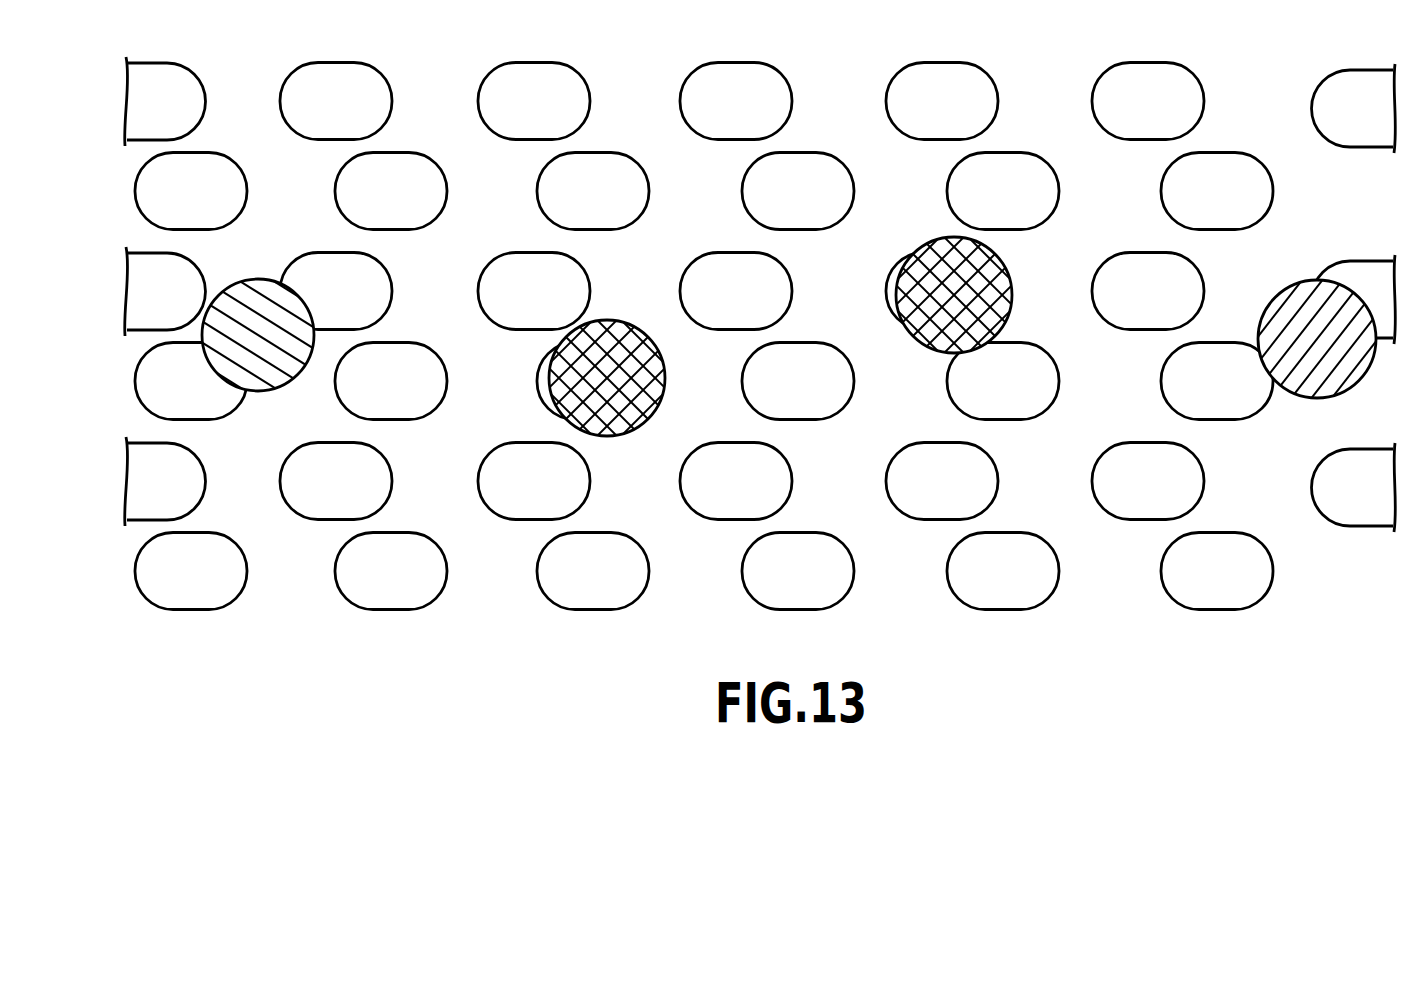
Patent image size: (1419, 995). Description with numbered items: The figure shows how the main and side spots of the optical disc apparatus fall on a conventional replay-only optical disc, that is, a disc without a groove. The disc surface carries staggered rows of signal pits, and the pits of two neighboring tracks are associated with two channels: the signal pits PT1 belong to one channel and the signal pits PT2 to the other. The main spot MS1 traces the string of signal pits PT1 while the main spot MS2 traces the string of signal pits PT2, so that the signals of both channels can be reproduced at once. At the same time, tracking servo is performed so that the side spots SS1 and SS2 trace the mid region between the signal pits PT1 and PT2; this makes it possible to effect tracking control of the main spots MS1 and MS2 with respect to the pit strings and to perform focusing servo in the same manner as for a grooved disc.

The signal pit PT1 is at (1052, 193).
The signal pit PT2 is at (1103, 88).
The main spot MS1 is at (617, 413).
The main spot MS2 is at (925, 327).
The side spot SS1 is at (1352, 375).
The side spot SS2 is at (265, 380).